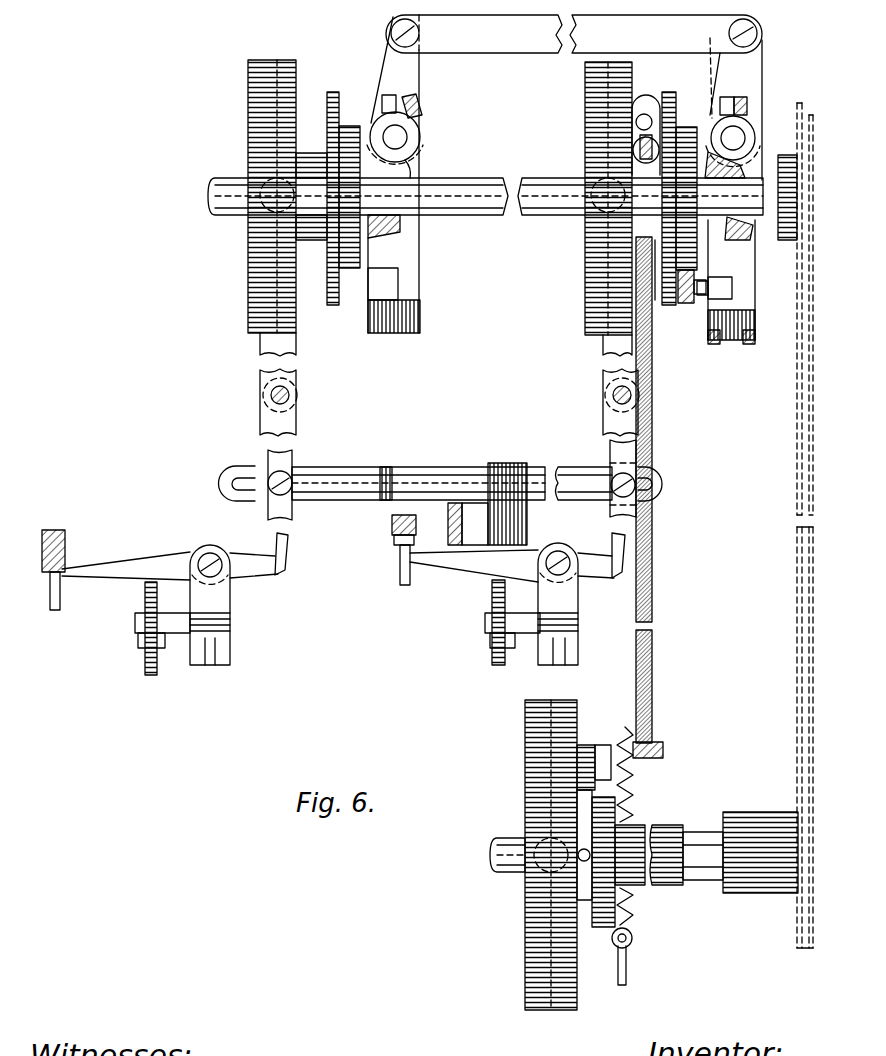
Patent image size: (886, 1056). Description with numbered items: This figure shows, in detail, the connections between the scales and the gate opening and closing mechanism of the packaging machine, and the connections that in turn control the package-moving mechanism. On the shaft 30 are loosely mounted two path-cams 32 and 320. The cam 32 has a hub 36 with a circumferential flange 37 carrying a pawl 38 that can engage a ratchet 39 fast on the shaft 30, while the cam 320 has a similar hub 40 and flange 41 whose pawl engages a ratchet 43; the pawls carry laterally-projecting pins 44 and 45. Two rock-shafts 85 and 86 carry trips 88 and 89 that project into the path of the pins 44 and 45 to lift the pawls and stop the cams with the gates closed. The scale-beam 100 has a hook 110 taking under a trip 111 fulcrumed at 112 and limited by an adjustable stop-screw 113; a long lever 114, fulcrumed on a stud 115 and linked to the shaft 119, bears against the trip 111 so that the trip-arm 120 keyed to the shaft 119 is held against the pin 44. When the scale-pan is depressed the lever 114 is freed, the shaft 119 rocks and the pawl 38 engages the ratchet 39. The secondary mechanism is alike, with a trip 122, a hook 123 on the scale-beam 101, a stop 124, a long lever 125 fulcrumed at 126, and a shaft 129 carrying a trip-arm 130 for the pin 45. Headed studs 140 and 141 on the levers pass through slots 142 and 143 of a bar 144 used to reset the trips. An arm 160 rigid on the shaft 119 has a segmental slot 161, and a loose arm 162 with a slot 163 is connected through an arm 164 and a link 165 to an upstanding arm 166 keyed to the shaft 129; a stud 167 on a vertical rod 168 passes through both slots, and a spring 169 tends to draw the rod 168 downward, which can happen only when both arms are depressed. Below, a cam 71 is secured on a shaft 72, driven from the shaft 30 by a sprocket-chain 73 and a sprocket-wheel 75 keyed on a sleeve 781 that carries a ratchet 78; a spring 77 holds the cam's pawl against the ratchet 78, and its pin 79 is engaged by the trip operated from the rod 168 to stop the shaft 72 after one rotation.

The shaft 30 is at (466, 178).
The path-cam 32 is at (585, 325).
The hub 36 is at (660, 300).
The circumferential flange 37 is at (678, 300).
The pawl 38 is at (690, 303).
The ratchet 39 is at (672, 130).
The hub 40 is at (308, 153).
The flange 41 is at (345, 178).
The ratchet 43 is at (350, 268).
The laterally-projecting pin 44 is at (712, 318).
The pin 45 is at (398, 232).
The cam 71 is at (525, 968).
The shaft 72 is at (495, 838).
The sprocket-chain 73 is at (797, 575).
The sprocket-wheel 75 is at (797, 940).
The spring 77 is at (603, 750).
The ratchet 78 is at (607, 930).
The laterally projecting pin 79 is at (635, 768).
The rock-shaft 85 is at (728, 342).
The rock-shaft 86 is at (395, 333).
The trip 88 is at (734, 282).
The trip 89 is at (392, 285).
The scale-beam 100 is at (390, 527).
The scale-beam 101 is at (58, 530).
The hook 110 is at (403, 582).
The trip 111 is at (490, 572).
The fulcrum 112 is at (270, 236).
The adjustable stop-screw 113 is at (497, 602).
The long lever 114 is at (603, 418).
The stud 115 is at (615, 393).
The shaft 119 is at (735, 137).
The trip-arm 120 is at (748, 165).
The trip 122 is at (118, 580).
The hook 123 is at (55, 607).
The stop 124 is at (145, 658).
The long lever 125 is at (262, 428).
The fulcrum 126 is at (274, 392).
The shaft 129 is at (397, 136).
The trip-arm 130 is at (413, 165).
The headed stud 140 is at (650, 483).
The headed stud 141 is at (238, 477).
The slot 142 is at (616, 475).
The slot 143 is at (255, 492).
The bar 144 is at (408, 467).
The arm 160 is at (704, 71).
The segmental slot 161 is at (625, 163).
The arm 162 is at (652, 118).
The slot 163 is at (646, 100).
The arm 164 is at (755, 62).
The link 165 is at (574, 52).
The upstanding arm 166 is at (416, 80).
The stud 167 is at (600, 138).
The vertical rod 168 is at (652, 548).
The spring 169 is at (625, 806).
The path-cam 320 is at (272, 60).
The sleeve 781 is at (660, 886).